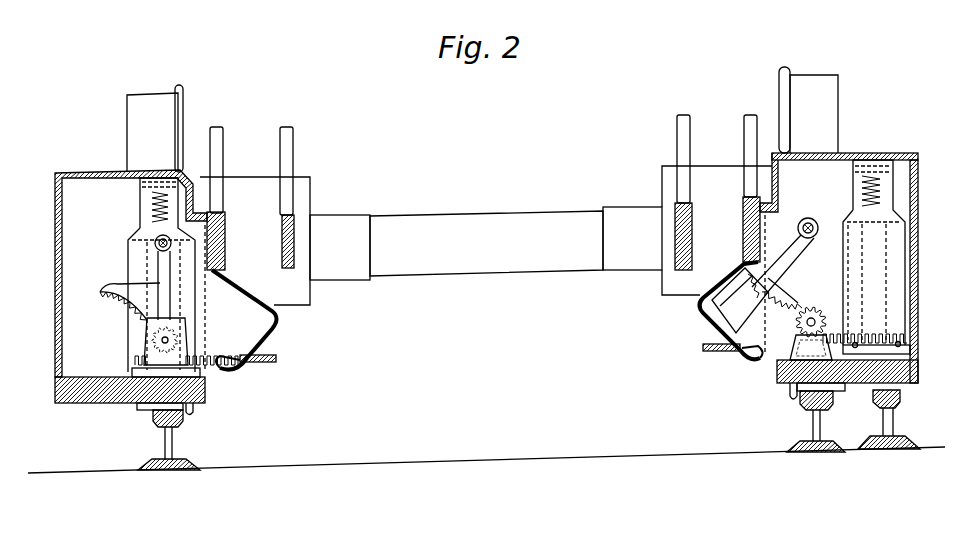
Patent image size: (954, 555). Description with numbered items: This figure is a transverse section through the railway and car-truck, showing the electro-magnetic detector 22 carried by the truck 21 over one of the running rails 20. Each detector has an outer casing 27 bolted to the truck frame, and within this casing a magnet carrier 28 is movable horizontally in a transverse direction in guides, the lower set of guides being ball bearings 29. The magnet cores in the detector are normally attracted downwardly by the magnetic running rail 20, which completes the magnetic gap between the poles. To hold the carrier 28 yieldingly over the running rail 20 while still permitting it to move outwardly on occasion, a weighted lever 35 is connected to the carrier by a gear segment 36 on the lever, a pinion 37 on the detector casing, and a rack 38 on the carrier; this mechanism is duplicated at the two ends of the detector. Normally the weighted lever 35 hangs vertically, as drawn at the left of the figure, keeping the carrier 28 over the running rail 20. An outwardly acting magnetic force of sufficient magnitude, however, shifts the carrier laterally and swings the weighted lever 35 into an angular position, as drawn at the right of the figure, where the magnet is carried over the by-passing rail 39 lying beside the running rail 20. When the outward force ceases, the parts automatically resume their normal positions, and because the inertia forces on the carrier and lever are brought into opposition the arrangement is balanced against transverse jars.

The running rail 20 is at (174, 438).
The truck 21 is at (279, 157).
The electro-magnetic detector 22 is at (470, 235).
The outer casing 27 is at (852, 151).
The magnet carrier 28 is at (850, 250).
The ball bearings 29 is at (519, 268).
The weighted lever 35 is at (710, 322).
The gear segment 36 is at (796, 300).
The pinion 37 is at (762, 369).
The rack 38 is at (814, 307).
The by-passing rail 39 is at (889, 422).